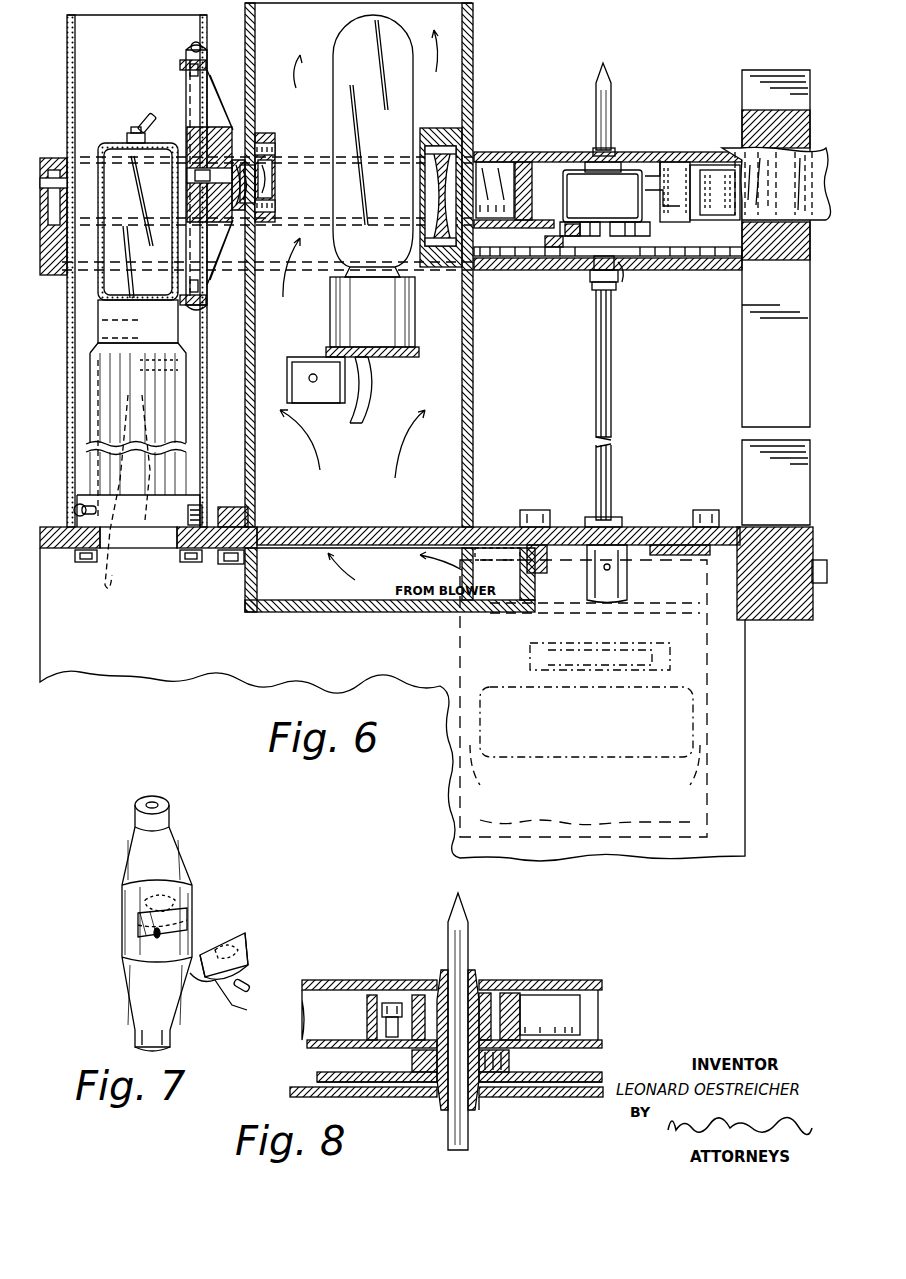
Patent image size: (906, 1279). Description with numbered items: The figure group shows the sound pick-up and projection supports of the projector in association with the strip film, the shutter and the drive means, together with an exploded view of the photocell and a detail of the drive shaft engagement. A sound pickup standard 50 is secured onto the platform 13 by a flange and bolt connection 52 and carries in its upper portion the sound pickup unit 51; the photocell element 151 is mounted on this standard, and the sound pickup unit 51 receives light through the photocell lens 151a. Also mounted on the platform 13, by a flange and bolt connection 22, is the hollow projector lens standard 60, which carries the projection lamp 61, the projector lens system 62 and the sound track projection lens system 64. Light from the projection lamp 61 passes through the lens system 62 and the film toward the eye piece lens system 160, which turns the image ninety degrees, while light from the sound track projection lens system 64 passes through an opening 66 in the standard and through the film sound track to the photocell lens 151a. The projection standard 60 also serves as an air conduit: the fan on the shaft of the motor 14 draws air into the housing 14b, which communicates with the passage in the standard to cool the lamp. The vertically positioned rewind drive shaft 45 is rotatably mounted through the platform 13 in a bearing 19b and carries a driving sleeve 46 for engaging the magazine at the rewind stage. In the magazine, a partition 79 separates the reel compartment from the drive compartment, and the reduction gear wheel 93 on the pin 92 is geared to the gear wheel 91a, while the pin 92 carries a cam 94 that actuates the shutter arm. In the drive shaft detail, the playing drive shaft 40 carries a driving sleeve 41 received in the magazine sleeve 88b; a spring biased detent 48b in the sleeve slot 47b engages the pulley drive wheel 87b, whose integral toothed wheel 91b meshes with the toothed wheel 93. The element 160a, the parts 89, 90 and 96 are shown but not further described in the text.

In FIG. 6, the platform 13 is at (68, 526).
In FIG. 6, the motor 14 is at (595, 793).
In FIG. 6, the housing 14b is at (300, 598).
In FIG. 6, the bearing 19b is at (624, 522).
In FIG. 6, the flange and bolt connection 22 is at (236, 508).
In FIG. 8, the playing drive shaft 40 is at (452, 916).
In FIG. 8, the driving sleeve 41 is at (480, 960).
In FIG. 6, the rewind drive shaft 45 is at (611, 100).
In FIG. 6, the driving sleeve 46 is at (620, 288).
In FIG. 8, the sleeve slot 47b is at (508, 1057).
In FIG. 8, the spring biased detent 48b is at (478, 1100).
In FIG. 6, the sound pickup standard 50 is at (68, 352).
In FIG. 6, the sound pickup unit 51 is at (88, 319).
In FIG. 6, the flange and bolt connection 52 is at (180, 556).
In FIG. 6, the projector lens standard 60 is at (471, 303).
In FIG. 6, the projection lamp 61 is at (388, 125).
In FIG. 6, the projector lens system 62 is at (428, 186).
In FIG. 6, the sound track projection lens system 64 is at (274, 186).
In FIG. 6, the opening 66 is at (274, 172).
In FIG. 6, the partition 79 is at (500, 232).
In FIG. 8, the pulley drive wheel 87b is at (412, 1058).
In FIG. 8, the magazine sleeve 88b is at (440, 985).
In FIG. 8, the housing 89 is at (496, 990).
In FIG. 8, the coil 90 is at (550, 1015).
In FIG. 6, the gear wheel 91a is at (690, 250).
In FIG. 8, the toothed wheel 91b is at (556, 1072).
In FIG. 6, the pin 92 is at (624, 276).
In FIG. 6, the toothed wheel 93 is at (592, 282).
In FIG. 6, the cam 94 is at (603, 222).
In FIG. 6, the spacer block 96 is at (550, 260).
In FIG. 6, the photocell element 151 is at (200, 98).
In FIG. 7, the photocell element 151 is at (147, 866).
In FIG. 6, the photocell lens 151a is at (232, 160).
In FIG. 7, the photocell lens 151a is at (246, 958).
In FIG. 6, the eye piece lens system 160 is at (826, 150).
In FIG. 6, the column lower portion 160a is at (750, 345).